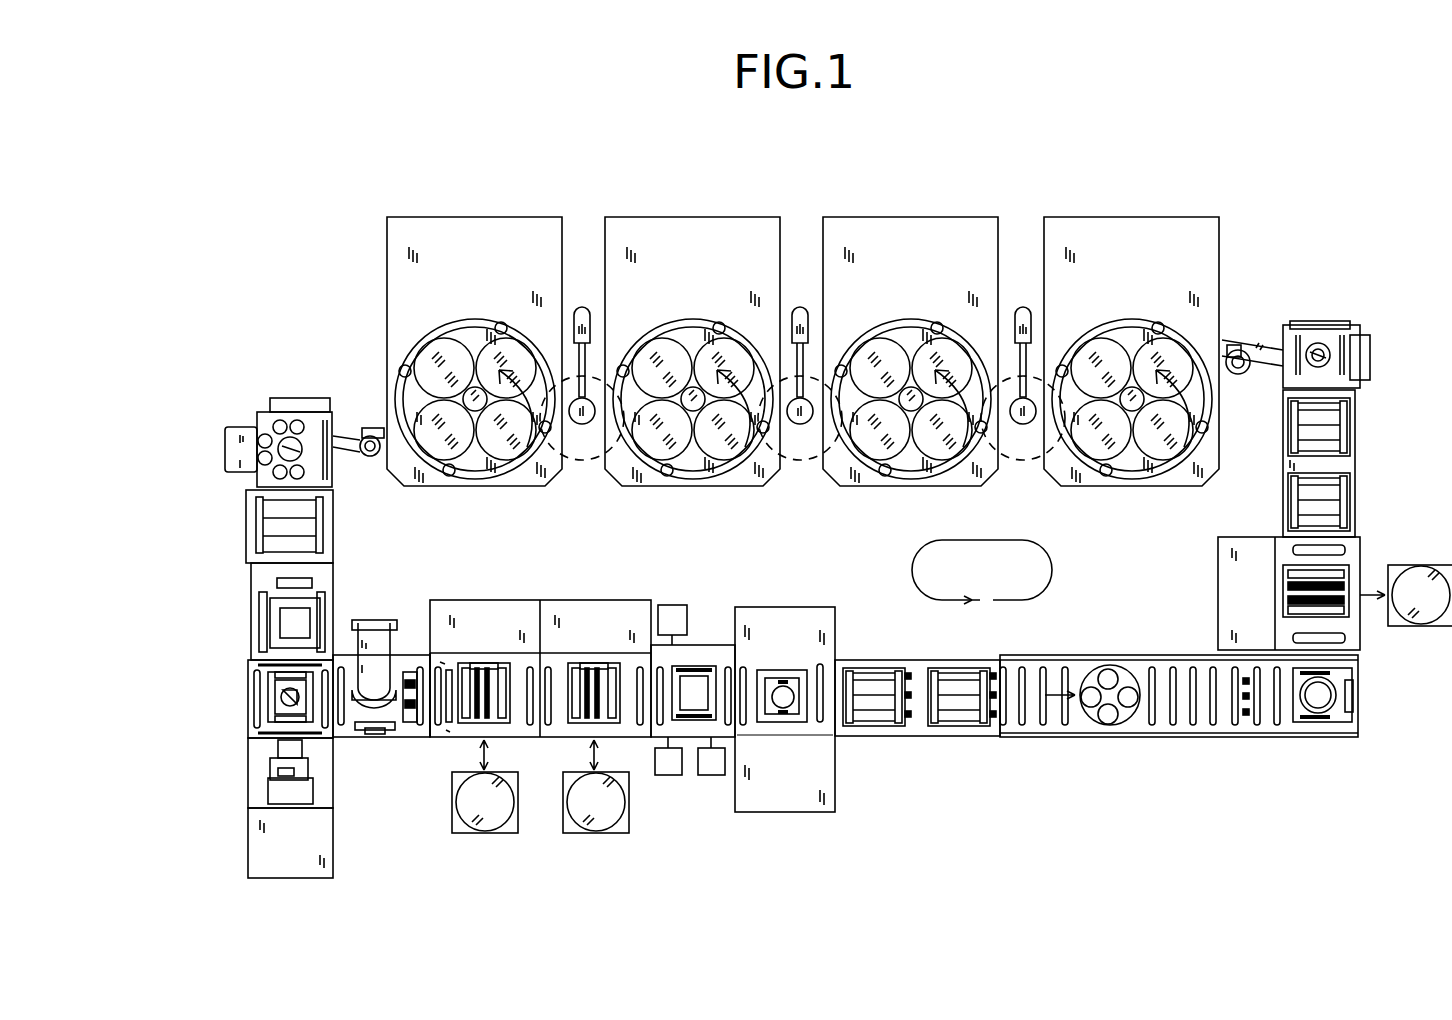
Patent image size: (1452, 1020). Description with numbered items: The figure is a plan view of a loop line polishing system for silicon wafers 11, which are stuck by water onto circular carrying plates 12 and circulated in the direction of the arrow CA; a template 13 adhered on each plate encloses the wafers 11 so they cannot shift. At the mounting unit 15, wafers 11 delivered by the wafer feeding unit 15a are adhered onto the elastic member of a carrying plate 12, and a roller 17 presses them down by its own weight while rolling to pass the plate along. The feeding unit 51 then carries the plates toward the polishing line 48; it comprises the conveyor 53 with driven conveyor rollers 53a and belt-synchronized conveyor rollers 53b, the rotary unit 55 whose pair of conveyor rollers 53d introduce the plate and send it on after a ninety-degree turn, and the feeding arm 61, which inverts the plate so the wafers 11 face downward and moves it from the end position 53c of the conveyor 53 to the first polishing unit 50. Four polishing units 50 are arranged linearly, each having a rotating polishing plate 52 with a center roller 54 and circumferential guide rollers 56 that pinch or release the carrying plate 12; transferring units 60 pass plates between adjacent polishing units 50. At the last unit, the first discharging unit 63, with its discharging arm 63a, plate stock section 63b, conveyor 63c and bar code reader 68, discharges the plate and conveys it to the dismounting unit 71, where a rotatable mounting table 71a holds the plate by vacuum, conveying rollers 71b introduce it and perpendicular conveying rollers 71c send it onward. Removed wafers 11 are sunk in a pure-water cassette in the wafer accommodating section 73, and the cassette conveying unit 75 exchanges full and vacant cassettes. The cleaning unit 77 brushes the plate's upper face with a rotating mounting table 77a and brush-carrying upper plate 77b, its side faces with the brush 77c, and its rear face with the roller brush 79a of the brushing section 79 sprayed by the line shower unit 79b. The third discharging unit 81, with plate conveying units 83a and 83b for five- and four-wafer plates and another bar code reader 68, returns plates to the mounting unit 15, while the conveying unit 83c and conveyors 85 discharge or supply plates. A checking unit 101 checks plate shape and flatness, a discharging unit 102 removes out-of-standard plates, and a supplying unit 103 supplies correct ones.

The wafer 11 is at (1120, 725).
The carrying plate 12 is at (433, 430).
The template 13 is at (1090, 715).
The mounting unit 15 is at (778, 722).
The wafer feeding unit 15a is at (808, 812).
The roller 17 is at (848, 722).
The polishing line 48 is at (770, 466).
The polishing unit 50 is at (470, 250).
The feeding unit 51 is at (1273, 777).
The polishing plate 52 is at (483, 340).
The conveyor 53 is at (1018, 754).
The conveyor roller 53a is at (878, 720).
The conveyor roller 53b is at (1218, 715).
The position 53c is at (1330, 345).
The conveyor roller 53d is at (1355, 707).
The center roller 54 is at (465, 385).
The rotary unit 55 is at (1332, 740).
The guide roller 56 is at (405, 368).
The transferring unit 60 is at (582, 320).
The feeding arm 61 is at (1262, 325).
The first discharging unit 63 is at (221, 388).
The discharging arm 63a is at (360, 440).
The plate stock section 63b is at (258, 450).
The conveyor 63c is at (268, 534).
The bar code reader 68 is at (280, 623).
The dismounting unit 71 is at (278, 710).
The rotatable mounting table 71a is at (282, 697).
The conveying roller 71b is at (290, 672).
The conveying roller 71c is at (275, 722).
The wafer accommodating section 73 is at (260, 775).
The cassette conveying unit 75 is at (260, 840).
The cleaning unit 77 is at (403, 753).
The mounting table 77a is at (357, 740).
The upper plate 77b is at (410, 690).
The brush 77c is at (375, 738).
The brushing section 79 is at (446, 651).
The roller brush 79a is at (435, 740).
The line shower unit 79b is at (450, 690).
The third discharging unit 81 is at (596, 592).
The plate conveying unit 83a is at (515, 610).
The plate conveying unit 83b is at (636, 610).
The conveying unit 83c is at (1340, 585).
The conveyor 85 is at (505, 835).
The checking unit 101 is at (685, 605).
The discharging unit 102 is at (710, 775).
The supplying unit 103 is at (665, 775).
The arrow CA is at (1052, 570).